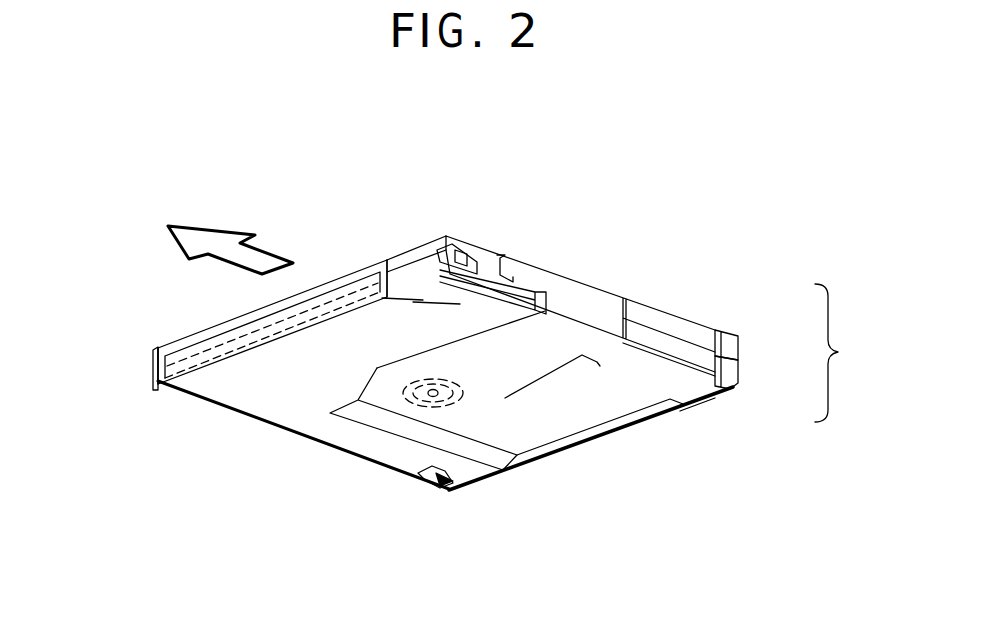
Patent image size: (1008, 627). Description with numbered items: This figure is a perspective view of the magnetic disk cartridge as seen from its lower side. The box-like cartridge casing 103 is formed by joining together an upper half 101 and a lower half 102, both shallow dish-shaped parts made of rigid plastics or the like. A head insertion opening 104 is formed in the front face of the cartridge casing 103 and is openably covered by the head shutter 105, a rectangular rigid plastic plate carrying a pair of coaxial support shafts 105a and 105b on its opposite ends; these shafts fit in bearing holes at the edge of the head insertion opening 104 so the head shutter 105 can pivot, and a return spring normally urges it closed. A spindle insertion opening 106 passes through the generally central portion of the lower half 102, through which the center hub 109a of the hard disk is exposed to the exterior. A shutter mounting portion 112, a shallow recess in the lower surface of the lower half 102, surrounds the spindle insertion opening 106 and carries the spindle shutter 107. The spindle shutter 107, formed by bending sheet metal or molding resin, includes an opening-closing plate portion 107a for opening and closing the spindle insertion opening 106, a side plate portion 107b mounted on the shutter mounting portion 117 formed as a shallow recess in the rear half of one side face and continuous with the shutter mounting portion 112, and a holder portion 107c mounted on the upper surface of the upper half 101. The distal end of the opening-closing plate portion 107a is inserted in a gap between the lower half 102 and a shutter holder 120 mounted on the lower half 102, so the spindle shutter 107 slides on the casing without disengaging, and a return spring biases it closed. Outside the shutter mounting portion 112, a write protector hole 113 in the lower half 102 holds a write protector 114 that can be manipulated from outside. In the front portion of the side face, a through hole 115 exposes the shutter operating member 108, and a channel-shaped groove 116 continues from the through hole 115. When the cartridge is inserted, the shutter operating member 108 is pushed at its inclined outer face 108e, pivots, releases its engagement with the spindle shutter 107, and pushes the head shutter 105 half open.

The upper half 101 is at (760, 331).
The lower half 102 is at (764, 386).
The cartridge casing 103 is at (856, 353).
The head insertion opening 104 is at (109, 371).
The head shutter 105 is at (302, 280).
The support shaft 105a is at (370, 217).
The support shaft 105b is at (159, 329).
The spindle insertion opening 106 is at (495, 467).
The spindle shutter 107 is at (457, 363).
The opening-closing plate portion 107a is at (546, 413).
The side plate portion 107b is at (608, 256).
The holder portion 107c is at (601, 228).
The shutter operating member 108 is at (502, 254).
The inclined outer face 108e is at (533, 212).
The center hub 109a is at (370, 462).
The shutter mounting portion 112 is at (361, 433).
The write protector hole 113 is at (466, 523).
The write protector 114 is at (415, 516).
The through hole 115 is at (471, 199).
The groove 116 is at (429, 239).
The shutter mounting portion 117 is at (703, 431).
The shutter holder 120 is at (525, 508).